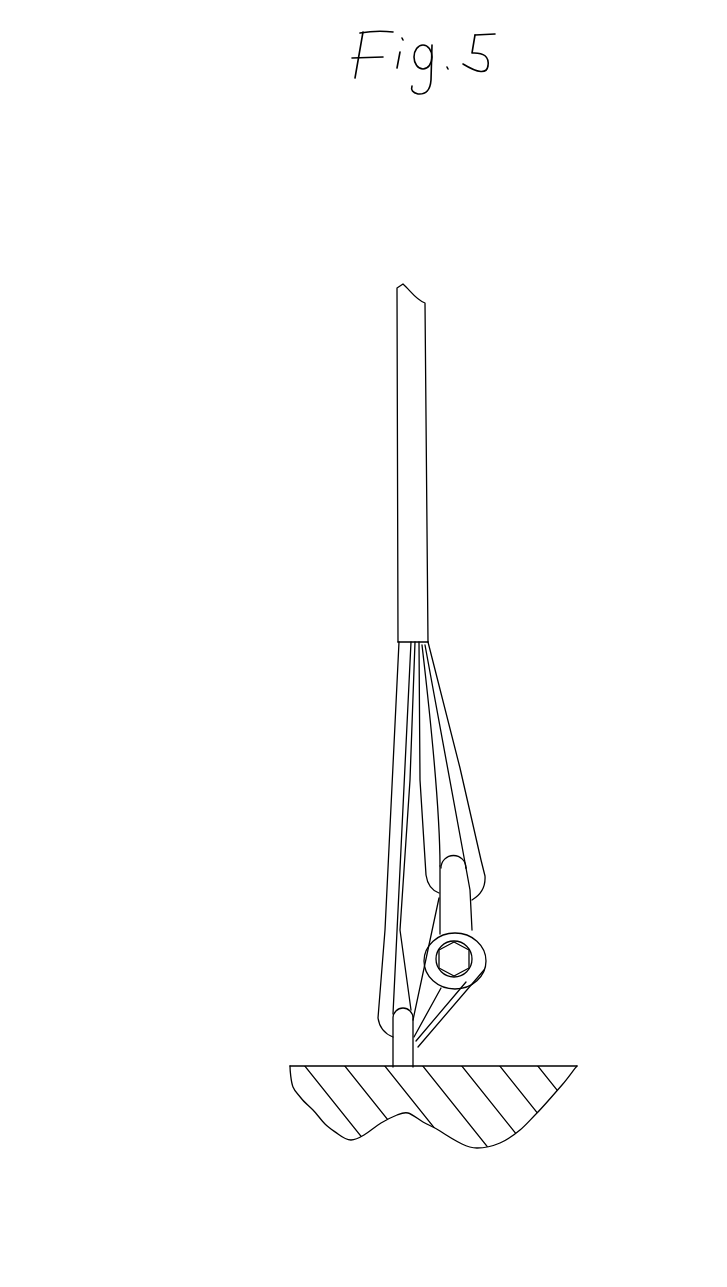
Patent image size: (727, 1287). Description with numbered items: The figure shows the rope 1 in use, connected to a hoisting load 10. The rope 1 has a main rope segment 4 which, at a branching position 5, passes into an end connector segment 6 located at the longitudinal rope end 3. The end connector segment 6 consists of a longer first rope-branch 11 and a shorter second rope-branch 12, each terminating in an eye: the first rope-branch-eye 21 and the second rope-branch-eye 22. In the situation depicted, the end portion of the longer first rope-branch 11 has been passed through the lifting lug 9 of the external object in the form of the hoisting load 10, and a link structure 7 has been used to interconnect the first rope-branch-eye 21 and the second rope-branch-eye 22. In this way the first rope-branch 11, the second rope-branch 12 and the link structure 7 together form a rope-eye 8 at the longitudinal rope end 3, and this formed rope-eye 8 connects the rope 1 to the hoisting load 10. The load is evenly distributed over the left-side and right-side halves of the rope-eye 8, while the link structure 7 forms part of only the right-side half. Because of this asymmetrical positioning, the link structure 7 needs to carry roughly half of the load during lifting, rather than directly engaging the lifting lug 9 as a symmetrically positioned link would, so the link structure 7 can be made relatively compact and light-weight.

The rope 1 is at (112, 144).
The longitudinal rope end 3 is at (103, 1084).
The main rope segment 4 is at (145, 452).
The branching position 5 is at (155, 648).
The end connector segment 6 is at (113, 845).
The link structure 7 is at (456, 912).
The rope-eye 8 is at (238, 932).
The lifting lug 9 is at (394, 1053).
The hoisting load 10 is at (296, 1151).
The first rope-branch 11 is at (332, 772).
The second rope-branch 12 is at (520, 718).
The first rope-branch-eye 21 is at (512, 1032).
The second rope-branch-eye 22 is at (563, 798).